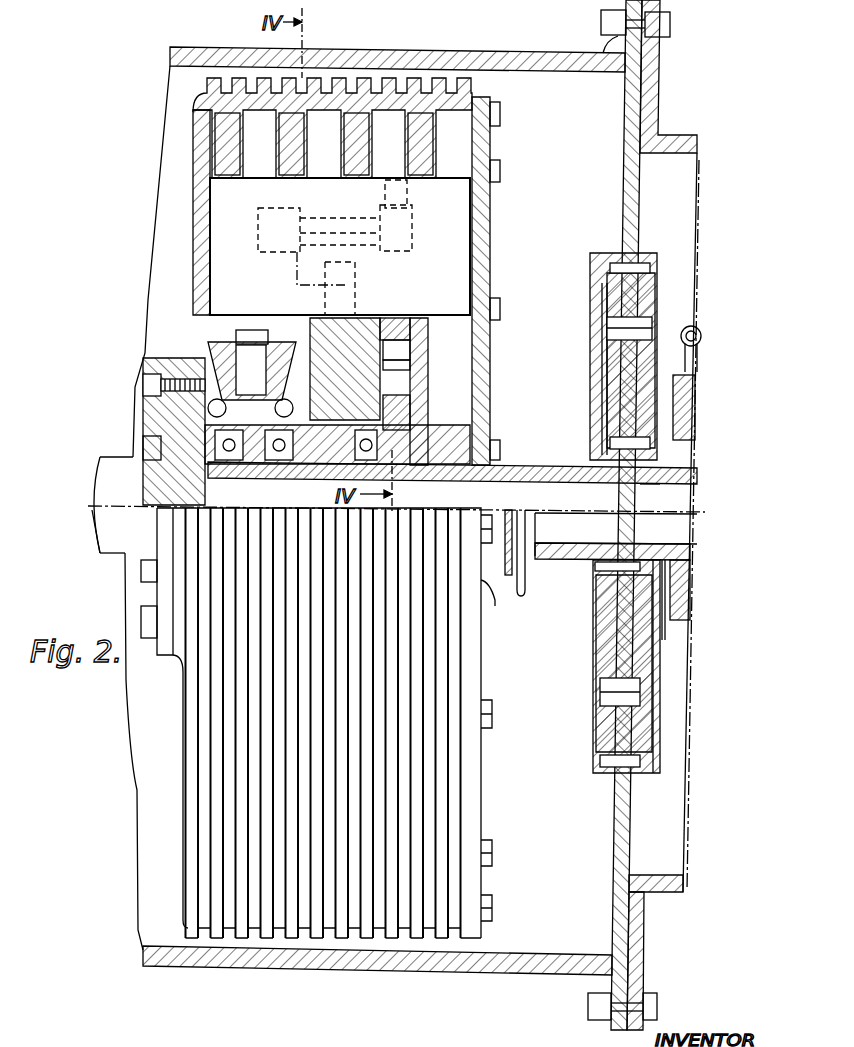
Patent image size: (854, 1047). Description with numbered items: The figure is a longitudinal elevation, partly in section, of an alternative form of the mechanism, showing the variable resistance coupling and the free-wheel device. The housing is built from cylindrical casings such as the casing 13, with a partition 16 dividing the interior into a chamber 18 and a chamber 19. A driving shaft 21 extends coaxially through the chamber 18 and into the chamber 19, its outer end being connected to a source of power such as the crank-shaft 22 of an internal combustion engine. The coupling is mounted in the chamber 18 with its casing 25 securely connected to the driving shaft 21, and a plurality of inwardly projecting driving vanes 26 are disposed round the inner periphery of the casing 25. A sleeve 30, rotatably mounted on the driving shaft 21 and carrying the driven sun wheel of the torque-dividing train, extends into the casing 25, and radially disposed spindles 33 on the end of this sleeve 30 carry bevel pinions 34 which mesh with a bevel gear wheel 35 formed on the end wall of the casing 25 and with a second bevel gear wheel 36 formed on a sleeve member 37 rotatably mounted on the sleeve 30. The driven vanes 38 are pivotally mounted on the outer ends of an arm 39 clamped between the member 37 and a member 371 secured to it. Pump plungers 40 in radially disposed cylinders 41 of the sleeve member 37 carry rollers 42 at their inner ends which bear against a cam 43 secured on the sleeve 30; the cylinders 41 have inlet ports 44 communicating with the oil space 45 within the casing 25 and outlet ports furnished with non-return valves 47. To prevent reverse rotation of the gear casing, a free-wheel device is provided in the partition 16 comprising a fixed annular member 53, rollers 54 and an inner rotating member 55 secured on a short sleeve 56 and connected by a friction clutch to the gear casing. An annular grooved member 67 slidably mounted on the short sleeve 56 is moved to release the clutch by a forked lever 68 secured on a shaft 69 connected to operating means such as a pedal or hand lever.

The cylindrical casing 13 is at (370, 60).
The chamber 18 is at (517, 90).
The partition 16 is at (632, 160).
The chamber 19 is at (672, 165).
The cylindrical casing 25 is at (200, 195).
The driving vanes 26 is at (322, 153).
The driven vanes 38 is at (232, 237).
The arm 39 is at (335, 292).
The second bevel gear wheel 36 is at (262, 328).
The sleeve member 37 is at (300, 388).
The radially disposed spindles 33 is at (245, 356).
The bevel pinions 34 is at (220, 386).
The bevel gear wheel 35 is at (250, 398).
The driving shaft 21 is at (235, 488).
The crank-shaft 22 is at (125, 525).
The fixed annular member 53 is at (605, 263).
The rollers 54 is at (630, 330).
The inner rotating member 55 is at (630, 385).
The shaft 69 is at (688, 326).
The non-return valves 47 is at (402, 325).
The member 371 is at (412, 340).
The oil space 45 is at (470, 334).
The cylinders 41 is at (430, 352).
The inlet ports 44 is at (415, 368).
The pump plungers 40 is at (430, 380).
The rollers 42 is at (410, 420).
The cam 43 is at (400, 450).
The sleeve 30 is at (574, 478).
The forked lever 68 is at (650, 495).
The short sleeve 56 is at (668, 622).
The annular grooved member 67 is at (690, 625).